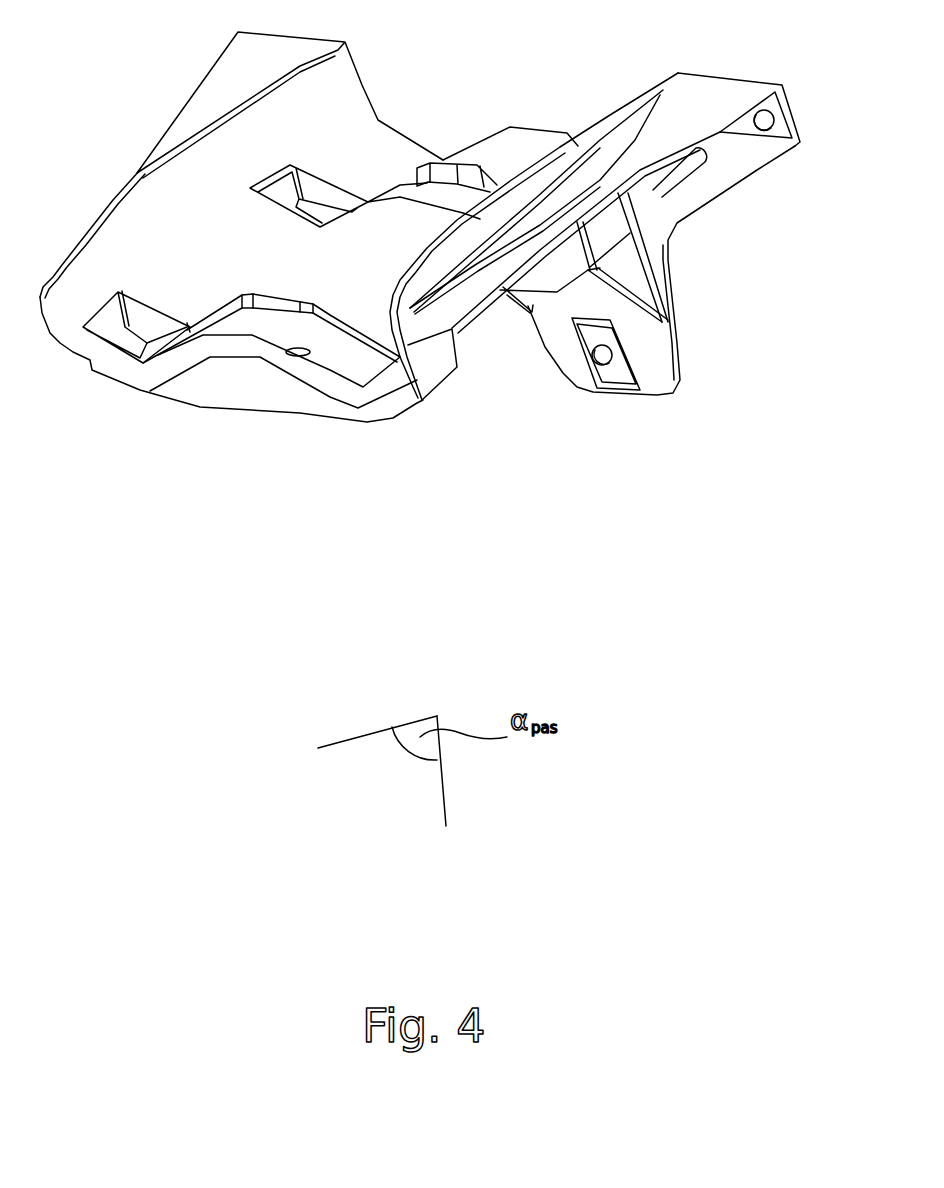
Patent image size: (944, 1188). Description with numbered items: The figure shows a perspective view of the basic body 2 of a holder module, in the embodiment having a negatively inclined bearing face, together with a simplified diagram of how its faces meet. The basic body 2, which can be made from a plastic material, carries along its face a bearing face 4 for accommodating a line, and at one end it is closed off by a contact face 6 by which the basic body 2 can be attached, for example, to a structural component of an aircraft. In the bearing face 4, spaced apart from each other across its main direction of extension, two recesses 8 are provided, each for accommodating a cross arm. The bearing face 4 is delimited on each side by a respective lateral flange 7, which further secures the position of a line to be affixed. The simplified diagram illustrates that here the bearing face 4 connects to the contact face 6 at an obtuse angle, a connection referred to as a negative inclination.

In FIG. 4, the basic body 2 is at (457, 239).
In FIG. 4A, the basic body 2 is at (357, 737).
In FIG. 4, the bearing face 4 is at (365, 143).
In FIG. 4, the contact face 6 is at (793, 103).
In FIG. 4A, the contact face 6 is at (443, 780).
In FIG. 4, the lateral flange 7 is at (435, 368).
In FIG. 4, the recess 8 is at (458, 190).